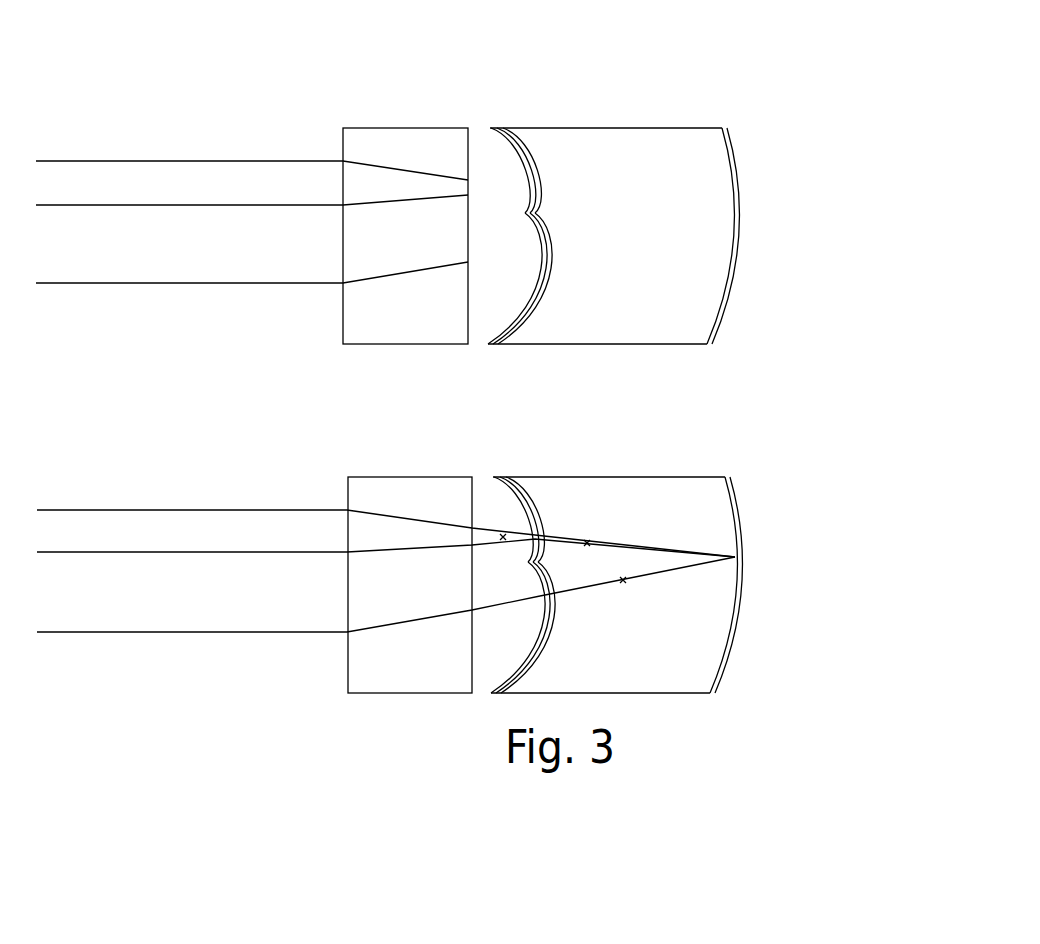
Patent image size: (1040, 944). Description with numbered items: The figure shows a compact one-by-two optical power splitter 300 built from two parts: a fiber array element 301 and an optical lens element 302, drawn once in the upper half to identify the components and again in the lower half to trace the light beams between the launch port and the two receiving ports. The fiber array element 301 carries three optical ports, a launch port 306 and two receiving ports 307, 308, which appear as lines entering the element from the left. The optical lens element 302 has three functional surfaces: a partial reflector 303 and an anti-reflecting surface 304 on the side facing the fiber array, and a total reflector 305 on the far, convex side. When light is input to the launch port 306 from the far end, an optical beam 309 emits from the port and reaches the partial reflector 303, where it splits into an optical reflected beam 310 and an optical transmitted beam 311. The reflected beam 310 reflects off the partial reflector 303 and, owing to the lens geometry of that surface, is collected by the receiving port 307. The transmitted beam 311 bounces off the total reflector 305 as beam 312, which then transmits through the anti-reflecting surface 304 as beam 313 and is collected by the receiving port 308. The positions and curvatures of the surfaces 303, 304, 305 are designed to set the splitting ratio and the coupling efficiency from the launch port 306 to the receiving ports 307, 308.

The optical system 300 is at (923, 98).
The fiber array element 301 is at (389, 111).
The optical lens element 302 is at (593, 115).
The partial reflector 303 is at (547, 183).
The anti-reflecting surface 304 is at (561, 282).
The total reflector 305 is at (754, 204).
The launch port 306 is at (163, 152).
The receiving port 307 is at (156, 218).
The receiving port 308 is at (157, 296).
The optical beam 309 is at (481, 518).
The optical reflected beam 310 is at (490, 553).
The optical transmitted beam 311 is at (618, 530).
The beam 312 is at (632, 597).
The beam 313 is at (489, 618).